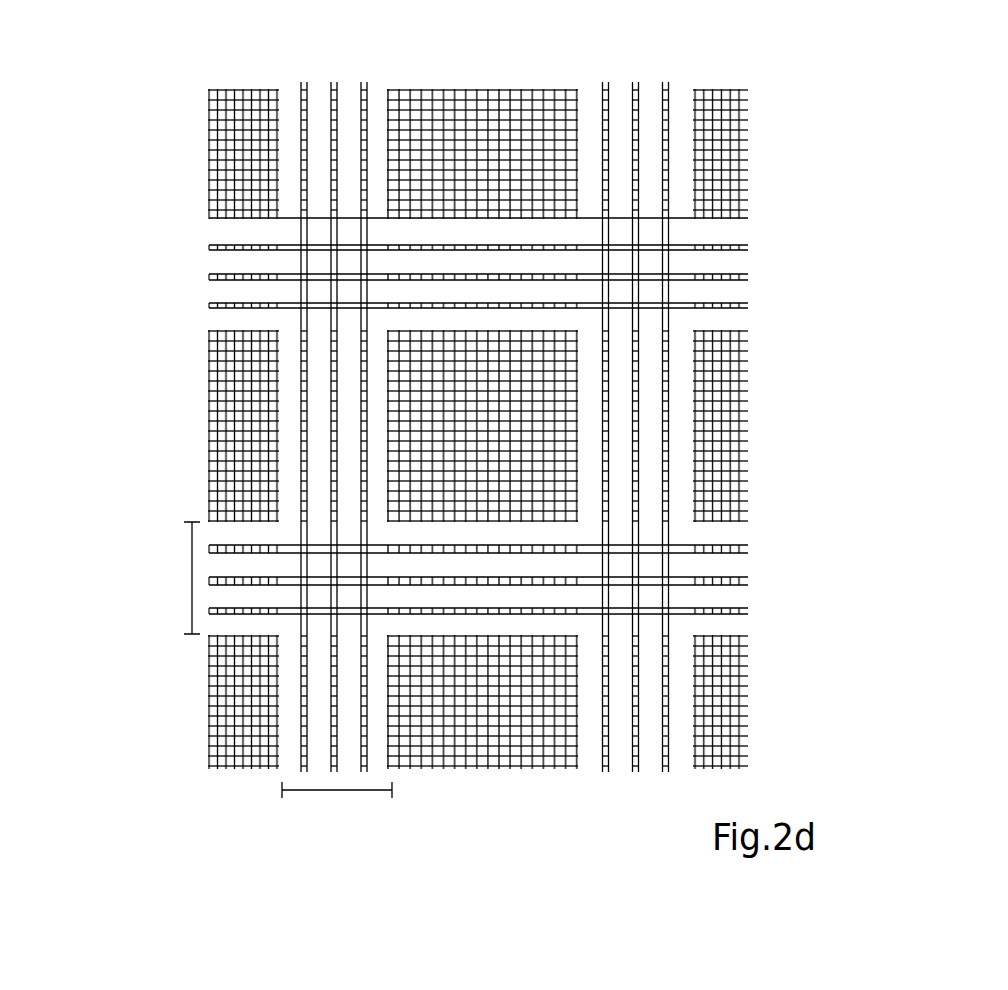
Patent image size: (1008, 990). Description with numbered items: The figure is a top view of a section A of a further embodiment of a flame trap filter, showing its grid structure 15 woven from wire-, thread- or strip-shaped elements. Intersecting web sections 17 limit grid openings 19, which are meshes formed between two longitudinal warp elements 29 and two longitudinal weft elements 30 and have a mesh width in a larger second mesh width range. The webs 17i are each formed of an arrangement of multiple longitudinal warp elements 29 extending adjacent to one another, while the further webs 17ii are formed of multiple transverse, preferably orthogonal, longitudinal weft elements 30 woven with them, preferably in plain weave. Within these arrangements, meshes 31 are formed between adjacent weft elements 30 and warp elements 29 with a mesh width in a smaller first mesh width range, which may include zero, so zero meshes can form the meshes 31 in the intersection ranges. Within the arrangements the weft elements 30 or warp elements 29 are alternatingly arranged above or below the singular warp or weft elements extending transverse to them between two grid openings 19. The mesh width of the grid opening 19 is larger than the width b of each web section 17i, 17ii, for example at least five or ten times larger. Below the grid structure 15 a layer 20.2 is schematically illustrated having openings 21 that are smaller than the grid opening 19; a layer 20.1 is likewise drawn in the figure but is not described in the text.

The grid structure 15 is at (268, 401).
The web sections 17 is at (645, 417).
The web 17i is at (326, 470).
The web 17ii is at (499, 262).
The grid opening 19 is at (562, 419).
The thick weft thread 20.1 is at (703, 535).
The layer 20.2 is at (545, 718).
The openings 21 is at (560, 453).
The longitudinal warp elements 29 is at (318, 357).
The longitudinal weft elements 30 is at (398, 297).
The meshes 31 is at (303, 273).
The section A is at (183, 746).
The width b is at (192, 578).